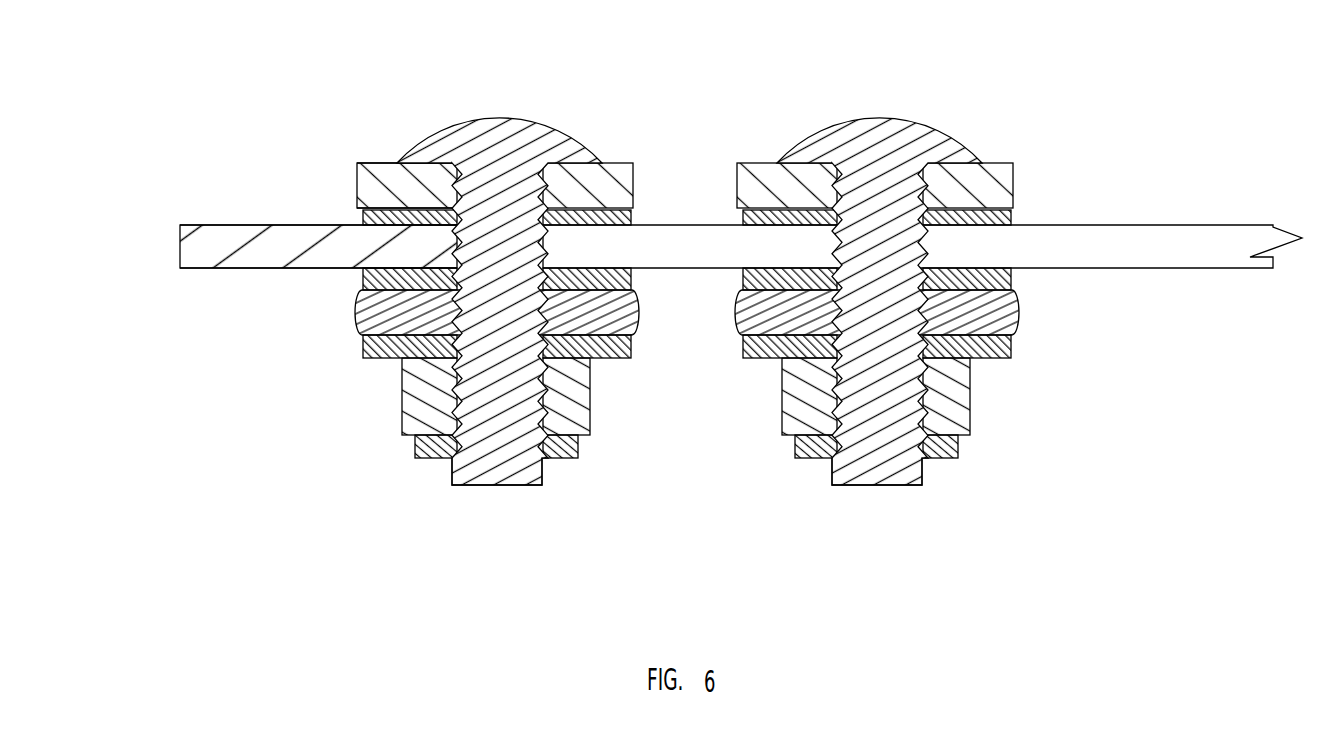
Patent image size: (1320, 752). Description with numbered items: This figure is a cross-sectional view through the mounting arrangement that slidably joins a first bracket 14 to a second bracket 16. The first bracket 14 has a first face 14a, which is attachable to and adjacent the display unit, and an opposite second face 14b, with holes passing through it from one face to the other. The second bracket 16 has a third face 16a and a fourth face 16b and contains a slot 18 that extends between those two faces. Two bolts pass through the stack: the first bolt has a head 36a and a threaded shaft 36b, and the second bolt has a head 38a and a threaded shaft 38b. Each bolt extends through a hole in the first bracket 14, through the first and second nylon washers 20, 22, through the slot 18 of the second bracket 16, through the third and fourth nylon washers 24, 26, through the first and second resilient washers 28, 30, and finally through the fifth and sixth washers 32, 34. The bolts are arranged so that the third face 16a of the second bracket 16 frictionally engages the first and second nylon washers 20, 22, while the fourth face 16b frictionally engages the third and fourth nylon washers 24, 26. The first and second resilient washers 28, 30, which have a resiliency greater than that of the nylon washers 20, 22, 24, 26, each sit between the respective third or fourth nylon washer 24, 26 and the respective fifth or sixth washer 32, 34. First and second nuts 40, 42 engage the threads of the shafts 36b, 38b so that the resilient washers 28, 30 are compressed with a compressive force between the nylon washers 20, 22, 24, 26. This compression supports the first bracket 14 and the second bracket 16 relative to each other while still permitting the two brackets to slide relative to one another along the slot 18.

The first bracket 14 is at (357, 187).
The first face 14a is at (373, 162).
The second face 14b is at (363, 223).
The second bracket 16 is at (180, 257).
The third face 16a is at (210, 225).
The fourth face 16b is at (200, 268).
The slot 18 is at (1147, 253).
The first nylon washer 20 is at (633, 215).
The second nylon washer 22 is at (911, 205).
The third nylon washer 24 is at (633, 277).
The fourth nylon washer 26 is at (913, 290).
The first resilient washer 28 is at (638, 313).
The second resilient washer 30 is at (912, 318).
The fifth washer 32 is at (633, 352).
The sixth washer 34 is at (916, 361).
The head 36a is at (483, 120).
The threaded shaft 36b is at (497, 485).
The head 38a is at (879, 266).
The threaded shaft 38b is at (879, 510).
The first nut 40 is at (572, 415).
The second nut 42 is at (911, 396).